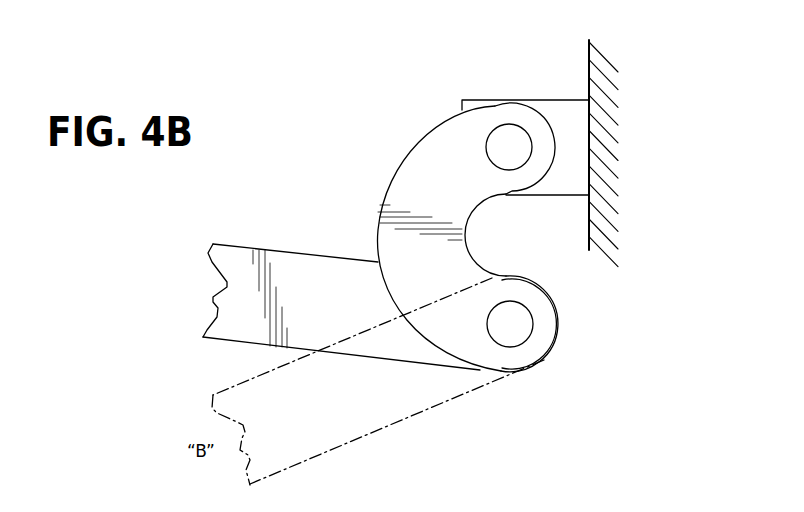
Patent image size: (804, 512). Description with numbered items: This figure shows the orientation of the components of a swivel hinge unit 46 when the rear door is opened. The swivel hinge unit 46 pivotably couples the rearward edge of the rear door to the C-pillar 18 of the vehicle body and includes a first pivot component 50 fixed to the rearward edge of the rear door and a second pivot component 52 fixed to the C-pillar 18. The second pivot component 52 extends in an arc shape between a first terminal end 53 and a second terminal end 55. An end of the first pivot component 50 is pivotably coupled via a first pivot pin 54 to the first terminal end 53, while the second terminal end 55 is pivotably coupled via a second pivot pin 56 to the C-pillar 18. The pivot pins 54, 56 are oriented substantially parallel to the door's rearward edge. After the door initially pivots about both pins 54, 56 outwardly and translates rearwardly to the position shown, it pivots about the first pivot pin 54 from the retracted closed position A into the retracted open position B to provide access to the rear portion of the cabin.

The C-pillar 18 is at (571, 178).
The swivel hinge unit 46 is at (499, 228).
The first pivot component 50 is at (341, 311).
The second pivot component 52 is at (458, 189).
The first terminal end 53 is at (558, 324).
The first pivot pin 54 is at (513, 334).
The second terminal end 55 is at (553, 133).
The second pivot pin 56 is at (512, 143).